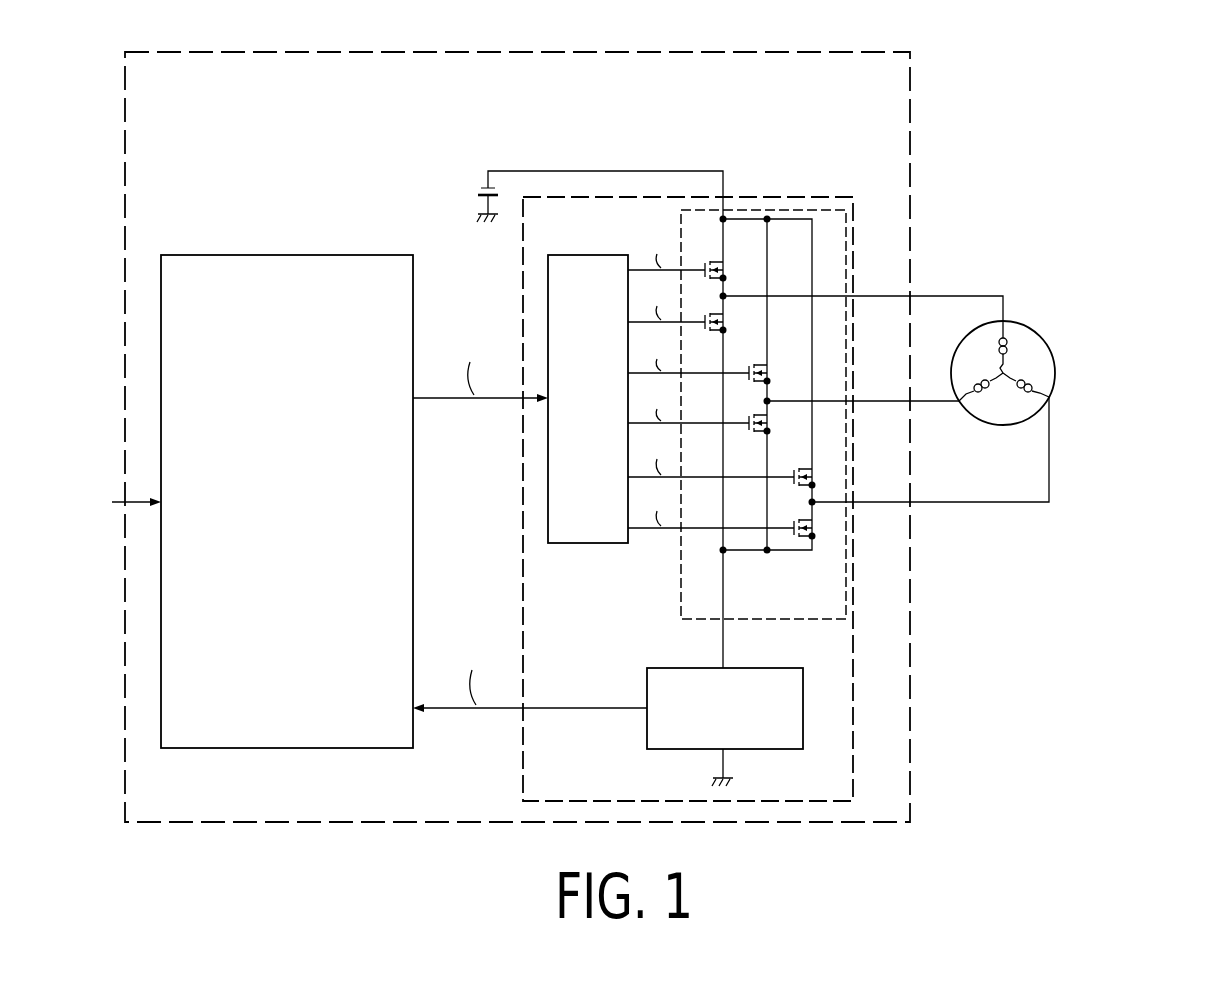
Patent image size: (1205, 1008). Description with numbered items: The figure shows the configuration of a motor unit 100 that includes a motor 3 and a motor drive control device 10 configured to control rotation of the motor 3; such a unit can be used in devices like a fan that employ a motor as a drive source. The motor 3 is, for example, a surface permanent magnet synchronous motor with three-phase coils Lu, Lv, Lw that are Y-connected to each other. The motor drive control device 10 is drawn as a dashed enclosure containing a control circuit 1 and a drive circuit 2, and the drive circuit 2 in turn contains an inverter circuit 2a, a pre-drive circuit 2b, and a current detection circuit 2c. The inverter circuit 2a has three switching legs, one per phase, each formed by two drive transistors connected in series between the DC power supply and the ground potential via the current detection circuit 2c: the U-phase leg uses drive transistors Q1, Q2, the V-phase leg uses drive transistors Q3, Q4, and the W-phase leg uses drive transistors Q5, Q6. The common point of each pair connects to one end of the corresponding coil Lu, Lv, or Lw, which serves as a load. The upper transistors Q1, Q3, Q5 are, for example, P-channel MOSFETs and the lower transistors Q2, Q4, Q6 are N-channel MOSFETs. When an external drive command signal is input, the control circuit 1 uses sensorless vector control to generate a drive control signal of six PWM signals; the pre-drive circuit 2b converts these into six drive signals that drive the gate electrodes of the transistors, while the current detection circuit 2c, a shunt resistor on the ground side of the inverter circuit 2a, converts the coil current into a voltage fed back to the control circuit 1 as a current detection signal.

The motor unit 100 is at (1103, 76).
The motor drive control device 10 is at (820, 50).
The control circuit 1 is at (185, 253).
The drive circuit 2 is at (862, 218).
The inverter circuit 2a is at (797, 209).
The pre-drive circuit 2b is at (578, 255).
The current detection circuit 2c is at (803, 708).
The motor 3 is at (1010, 320).
The drive transistor Q1 is at (707, 259).
The drive transistor Q2 is at (707, 311).
The drive transistor Q3 is at (750, 362).
The drive transistor Q4 is at (750, 413).
The drive transistor Q5 is at (794, 466).
The drive transistor Q6 is at (794, 517).
The coil Lu is at (993, 345).
The coil Lv is at (975, 394).
The coil Lw is at (1024, 394).